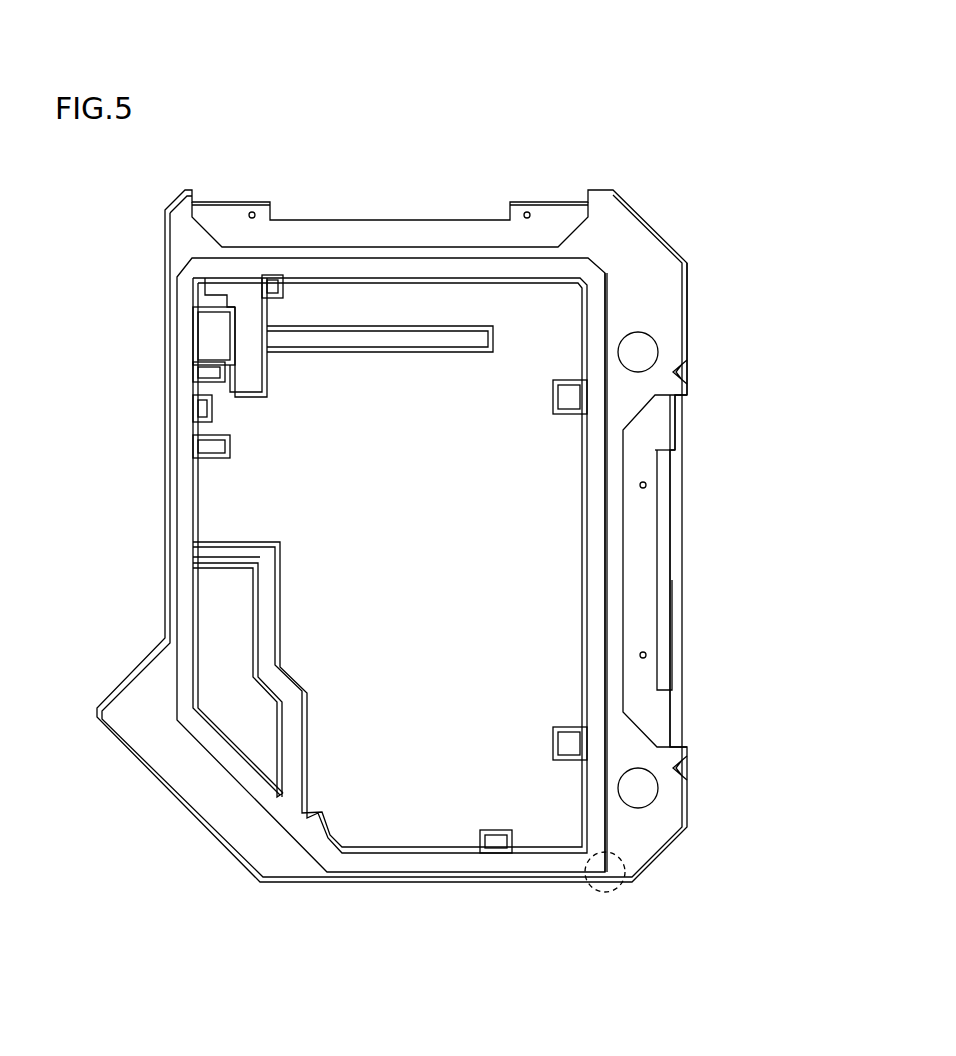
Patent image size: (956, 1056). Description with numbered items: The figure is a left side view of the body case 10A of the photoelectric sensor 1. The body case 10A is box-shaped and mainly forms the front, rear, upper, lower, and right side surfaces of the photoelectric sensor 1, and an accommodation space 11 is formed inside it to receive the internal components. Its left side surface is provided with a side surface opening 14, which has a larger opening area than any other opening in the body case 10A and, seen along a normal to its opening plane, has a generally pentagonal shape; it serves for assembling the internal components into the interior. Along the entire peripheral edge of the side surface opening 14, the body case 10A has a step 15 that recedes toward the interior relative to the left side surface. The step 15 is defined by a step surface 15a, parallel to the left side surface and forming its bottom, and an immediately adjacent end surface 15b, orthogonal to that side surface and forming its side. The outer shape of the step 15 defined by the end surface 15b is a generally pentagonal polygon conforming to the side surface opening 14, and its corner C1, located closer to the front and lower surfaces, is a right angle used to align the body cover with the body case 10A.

The photoelectric sensor 1 is at (725, 144).
The body case 10A is at (640, 294).
The accommodation space 11 is at (290, 500).
The side surface opening 14 is at (584, 522).
The step 15 is at (770, 556).
The step surface 15a is at (597, 568).
The end surface 15b is at (598, 640).
The corner C1 is at (605, 893).